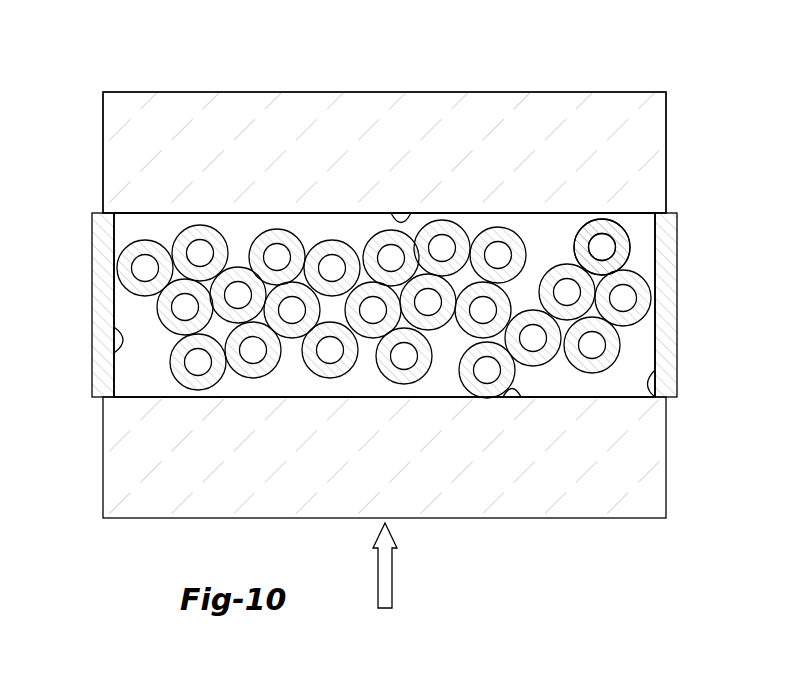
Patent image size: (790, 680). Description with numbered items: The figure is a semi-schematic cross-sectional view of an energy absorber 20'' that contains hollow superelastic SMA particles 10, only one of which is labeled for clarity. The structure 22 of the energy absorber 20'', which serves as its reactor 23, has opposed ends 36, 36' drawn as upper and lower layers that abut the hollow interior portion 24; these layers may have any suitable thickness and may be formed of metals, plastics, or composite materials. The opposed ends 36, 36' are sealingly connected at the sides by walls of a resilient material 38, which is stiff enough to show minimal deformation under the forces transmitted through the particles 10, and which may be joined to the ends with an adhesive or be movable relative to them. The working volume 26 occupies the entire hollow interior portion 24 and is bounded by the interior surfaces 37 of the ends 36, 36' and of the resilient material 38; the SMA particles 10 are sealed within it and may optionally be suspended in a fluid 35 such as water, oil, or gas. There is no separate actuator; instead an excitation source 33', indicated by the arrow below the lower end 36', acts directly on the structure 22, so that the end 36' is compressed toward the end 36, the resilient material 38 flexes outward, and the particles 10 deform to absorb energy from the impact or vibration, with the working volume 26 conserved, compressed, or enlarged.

The energy absorber 20'' is at (666, 32).
The structure 22 is at (384, 121).
The reactor 23 is at (570, 92).
The opposed end 36 is at (384, 137).
The opposed end 36' is at (384, 477).
The resilient material 38 is at (92, 300).
The working volume 26 is at (122, 232).
The hollow interior portion 24 is at (260, 226).
The SMA particle 10 is at (602, 226).
The fluid 35 is at (442, 385).
The interior surface 37 is at (402, 226).
The excitation source 33' is at (415, 565).